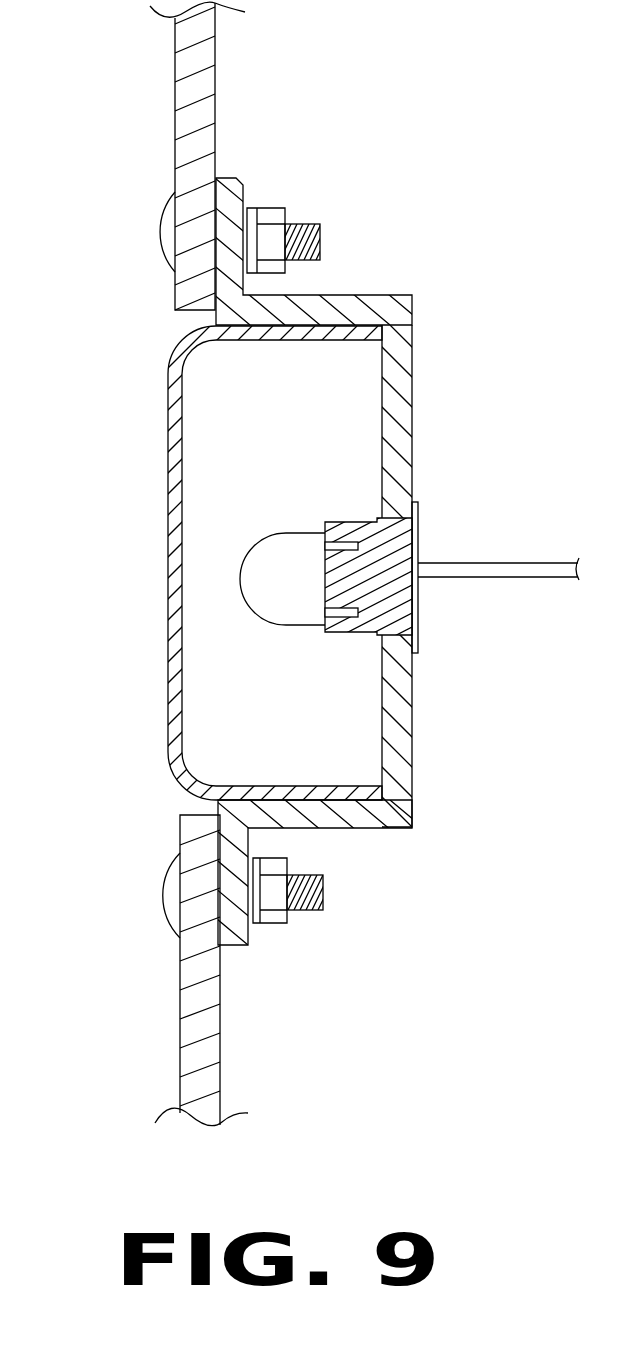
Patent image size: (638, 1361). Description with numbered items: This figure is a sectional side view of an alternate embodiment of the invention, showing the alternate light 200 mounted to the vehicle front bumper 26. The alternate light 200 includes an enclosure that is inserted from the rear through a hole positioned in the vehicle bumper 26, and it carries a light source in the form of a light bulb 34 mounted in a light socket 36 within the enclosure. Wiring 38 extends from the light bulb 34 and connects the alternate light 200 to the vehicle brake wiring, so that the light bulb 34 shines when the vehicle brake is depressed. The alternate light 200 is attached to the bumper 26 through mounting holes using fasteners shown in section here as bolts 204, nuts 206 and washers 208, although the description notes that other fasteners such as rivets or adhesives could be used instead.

The vehicle front bumper 26 is at (173, 66).
The alternate light 200 is at (168, 533).
The bolt 204 is at (160, 235).
The nut 206 is at (287, 210).
The washer 208 is at (250, 208).
The light bulb 34 is at (357, 633).
The light socket 36 is at (268, 626).
The wiring 38 is at (450, 560).